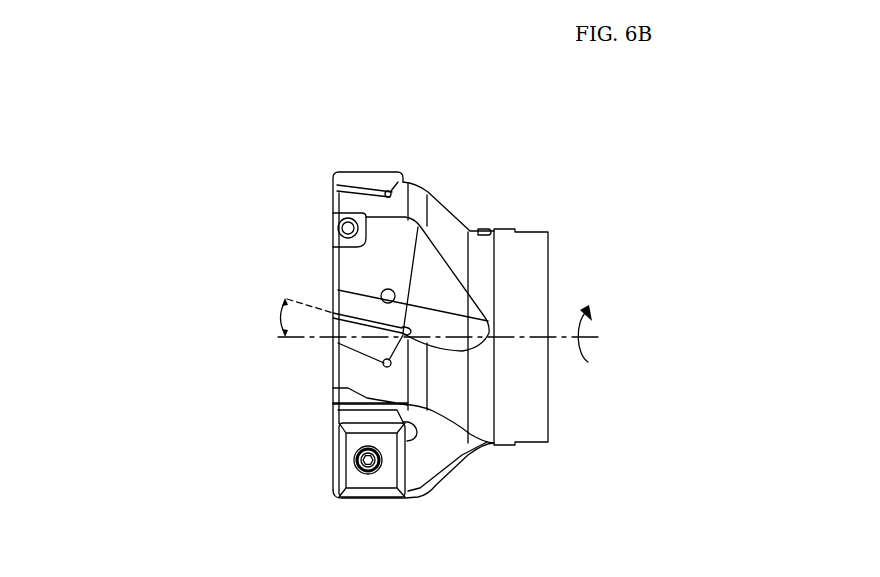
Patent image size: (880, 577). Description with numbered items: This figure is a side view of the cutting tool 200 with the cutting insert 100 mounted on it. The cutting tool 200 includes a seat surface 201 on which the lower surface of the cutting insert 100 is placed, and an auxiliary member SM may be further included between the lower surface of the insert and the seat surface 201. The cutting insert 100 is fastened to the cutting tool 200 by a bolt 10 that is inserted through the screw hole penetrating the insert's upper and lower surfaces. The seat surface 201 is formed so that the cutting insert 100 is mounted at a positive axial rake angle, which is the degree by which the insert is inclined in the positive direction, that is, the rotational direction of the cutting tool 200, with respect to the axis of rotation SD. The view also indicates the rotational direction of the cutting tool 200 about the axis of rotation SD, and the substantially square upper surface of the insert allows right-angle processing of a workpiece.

The cutting insert 100 is at (346, 309).
The cutting tool 200 is at (537, 230).
The seat surface 201 is at (343, 346).
The bolt 10 is at (375, 478).
The auxiliary member SM is at (345, 348).
The axis of rotation SD is at (596, 336).